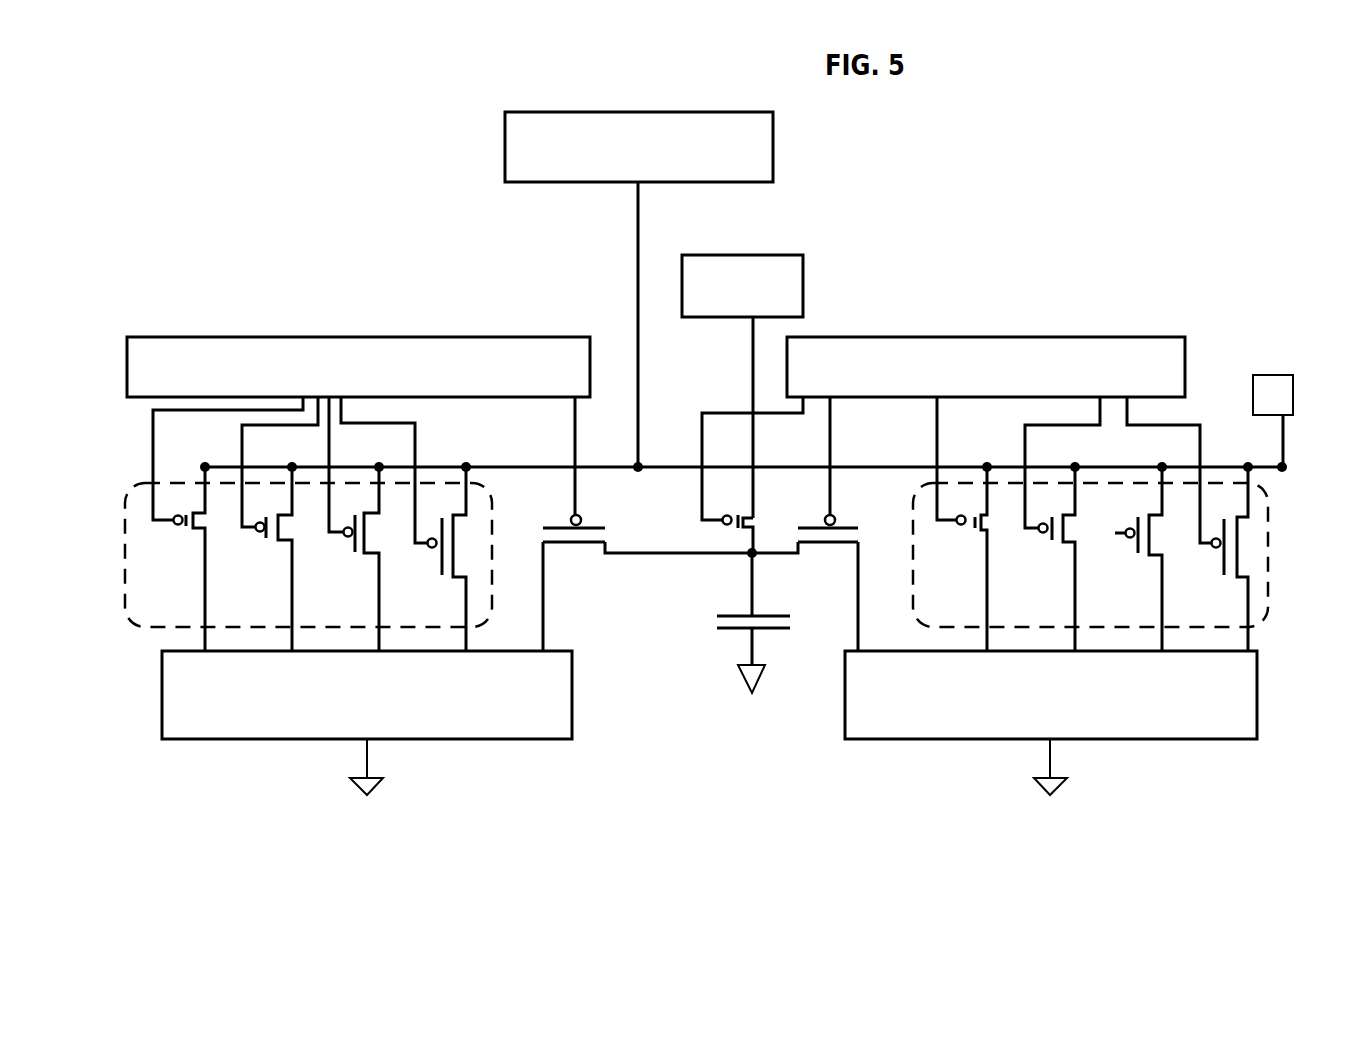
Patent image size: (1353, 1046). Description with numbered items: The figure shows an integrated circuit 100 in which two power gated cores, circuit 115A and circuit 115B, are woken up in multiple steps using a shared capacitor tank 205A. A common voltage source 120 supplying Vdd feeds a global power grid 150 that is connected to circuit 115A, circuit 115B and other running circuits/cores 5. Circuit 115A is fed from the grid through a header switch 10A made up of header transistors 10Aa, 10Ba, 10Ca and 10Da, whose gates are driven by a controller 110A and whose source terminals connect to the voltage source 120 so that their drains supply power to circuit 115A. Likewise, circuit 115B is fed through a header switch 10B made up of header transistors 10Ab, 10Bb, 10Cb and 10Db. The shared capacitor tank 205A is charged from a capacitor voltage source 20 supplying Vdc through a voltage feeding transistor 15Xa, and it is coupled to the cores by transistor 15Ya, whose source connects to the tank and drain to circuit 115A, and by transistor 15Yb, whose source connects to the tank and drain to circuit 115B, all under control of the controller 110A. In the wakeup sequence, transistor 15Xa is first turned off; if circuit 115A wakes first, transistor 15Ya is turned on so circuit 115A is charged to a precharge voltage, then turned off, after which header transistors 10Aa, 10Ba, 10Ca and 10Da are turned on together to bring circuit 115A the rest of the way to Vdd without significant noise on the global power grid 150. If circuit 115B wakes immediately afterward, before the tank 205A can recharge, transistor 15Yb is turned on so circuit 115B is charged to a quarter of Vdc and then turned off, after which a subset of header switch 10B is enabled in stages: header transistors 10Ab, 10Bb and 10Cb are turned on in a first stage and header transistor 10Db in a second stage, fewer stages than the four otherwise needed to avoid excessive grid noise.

The integrated circuit 100 is at (934, 116).
The voltage source 120 is at (639, 289).
The capacitor voltage source 20 is at (742, 386).
The controller 110A is at (656, 367).
The global power grid 150 is at (672, 412).
The other running circuits/cores 5 is at (1253, 326).
The header switch 10A is at (147, 623).
The header switch 10B is at (1253, 623).
The header transistor 10Aa is at (215, 524).
The header transistor 10Ba is at (270, 524).
The header transistor 10Ca is at (343, 524).
The header transistor 10Da is at (403, 524).
The header transistor 10Ab is at (950, 524).
The header transistor 10Bb is at (1053, 524).
The header transistor 10Cb is at (1127, 559).
The header transistor 10Db is at (1187, 524).
The circuit 115A is at (367, 729).
The circuit 115B is at (1051, 729).
The transistor 15Ya is at (627, 524).
The voltage feeding transistor 15Xa is at (720, 475).
The transistor 15Yb is at (828, 524).
The shared capacitor tank 205A is at (716, 637).